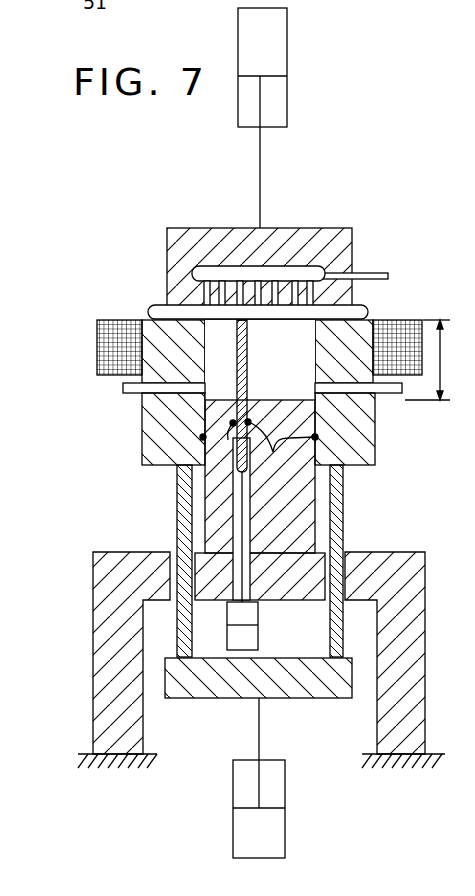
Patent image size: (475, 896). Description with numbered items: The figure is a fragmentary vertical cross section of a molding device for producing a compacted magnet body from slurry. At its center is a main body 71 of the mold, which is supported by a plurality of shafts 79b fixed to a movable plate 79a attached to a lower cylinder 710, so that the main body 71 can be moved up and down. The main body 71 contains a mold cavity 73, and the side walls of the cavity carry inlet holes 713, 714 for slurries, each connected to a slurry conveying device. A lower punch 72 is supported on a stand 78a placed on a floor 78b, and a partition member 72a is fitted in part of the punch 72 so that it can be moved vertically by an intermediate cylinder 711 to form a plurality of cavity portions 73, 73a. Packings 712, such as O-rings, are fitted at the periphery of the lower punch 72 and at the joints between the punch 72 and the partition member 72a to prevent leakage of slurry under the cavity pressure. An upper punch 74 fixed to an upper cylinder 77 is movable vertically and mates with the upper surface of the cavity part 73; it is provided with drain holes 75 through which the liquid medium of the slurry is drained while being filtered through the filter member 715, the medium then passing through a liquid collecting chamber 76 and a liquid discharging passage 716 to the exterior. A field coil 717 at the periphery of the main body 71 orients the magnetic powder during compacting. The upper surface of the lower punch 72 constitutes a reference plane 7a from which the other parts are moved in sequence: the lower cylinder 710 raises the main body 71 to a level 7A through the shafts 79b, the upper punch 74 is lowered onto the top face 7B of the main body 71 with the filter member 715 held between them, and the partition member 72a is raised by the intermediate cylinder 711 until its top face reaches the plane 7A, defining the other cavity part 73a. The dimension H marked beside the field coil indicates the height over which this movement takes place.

The main body 71 is at (150, 440).
The lower punch 72 is at (305, 518).
The partition member 72a is at (248, 347).
The mold cavity 73 is at (304, 398).
The cavity part 73a is at (215, 355).
The upper punch 74 is at (190, 237).
The drain holes 75 is at (300, 297).
The liquid collecting chamber 76 is at (272, 273).
The upper cylinder 77 is at (287, 97).
The stand 78a is at (100, 637).
The floor 78b is at (115, 767).
The movable plate 79a is at (207, 690).
The shafts 79b is at (340, 540).
The lower cylinder 710 is at (283, 787).
The intermediate cylinder 711 is at (258, 612).
The packings 712 is at (273, 452).
The inlet hole 713 is at (402, 391).
The inlet hole 714 is at (123, 388).
The filter member 715 is at (155, 307).
The liquid discharging passage 716 is at (372, 277).
The field coil 717 is at (106, 321).
The reference plane 7a is at (261, 386).
The level 7A is at (445, 310).
The top face 7B is at (392, 298).
The height dimension H is at (427, 360).